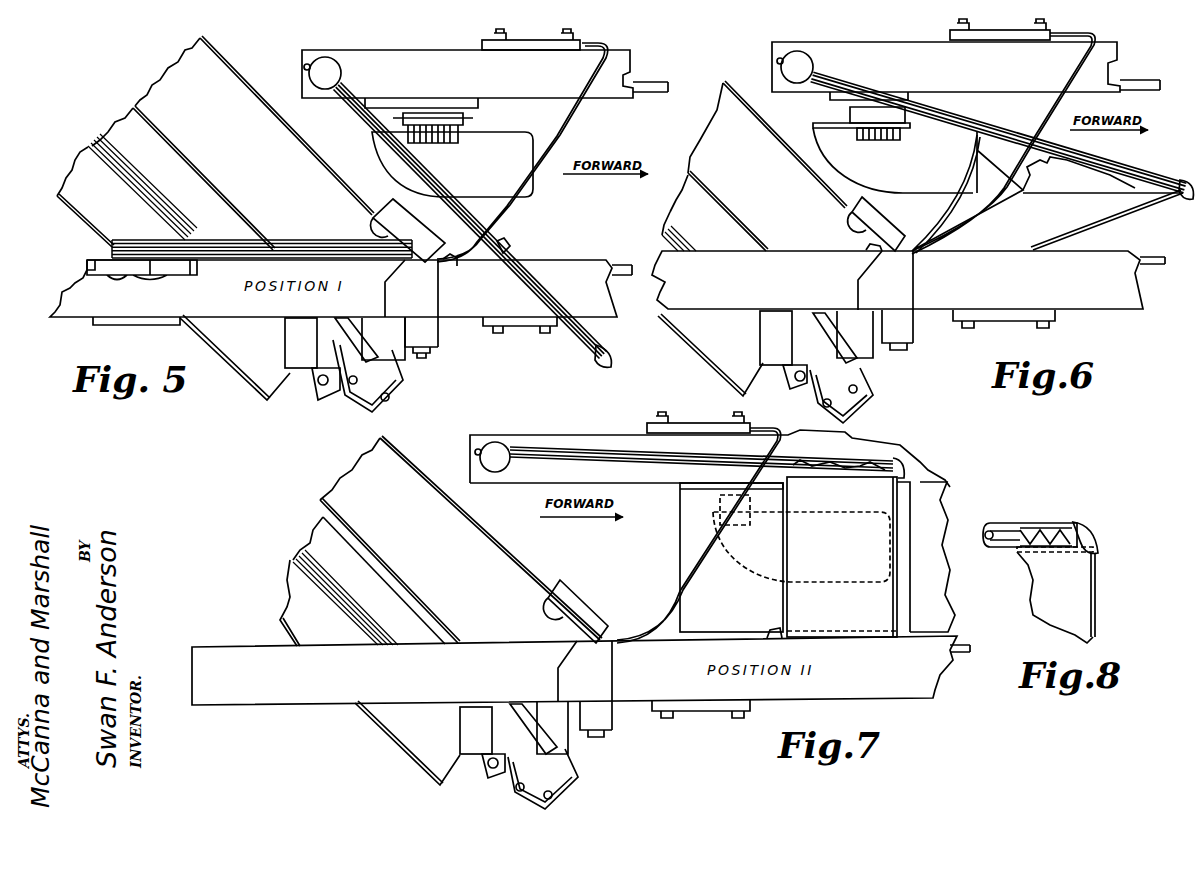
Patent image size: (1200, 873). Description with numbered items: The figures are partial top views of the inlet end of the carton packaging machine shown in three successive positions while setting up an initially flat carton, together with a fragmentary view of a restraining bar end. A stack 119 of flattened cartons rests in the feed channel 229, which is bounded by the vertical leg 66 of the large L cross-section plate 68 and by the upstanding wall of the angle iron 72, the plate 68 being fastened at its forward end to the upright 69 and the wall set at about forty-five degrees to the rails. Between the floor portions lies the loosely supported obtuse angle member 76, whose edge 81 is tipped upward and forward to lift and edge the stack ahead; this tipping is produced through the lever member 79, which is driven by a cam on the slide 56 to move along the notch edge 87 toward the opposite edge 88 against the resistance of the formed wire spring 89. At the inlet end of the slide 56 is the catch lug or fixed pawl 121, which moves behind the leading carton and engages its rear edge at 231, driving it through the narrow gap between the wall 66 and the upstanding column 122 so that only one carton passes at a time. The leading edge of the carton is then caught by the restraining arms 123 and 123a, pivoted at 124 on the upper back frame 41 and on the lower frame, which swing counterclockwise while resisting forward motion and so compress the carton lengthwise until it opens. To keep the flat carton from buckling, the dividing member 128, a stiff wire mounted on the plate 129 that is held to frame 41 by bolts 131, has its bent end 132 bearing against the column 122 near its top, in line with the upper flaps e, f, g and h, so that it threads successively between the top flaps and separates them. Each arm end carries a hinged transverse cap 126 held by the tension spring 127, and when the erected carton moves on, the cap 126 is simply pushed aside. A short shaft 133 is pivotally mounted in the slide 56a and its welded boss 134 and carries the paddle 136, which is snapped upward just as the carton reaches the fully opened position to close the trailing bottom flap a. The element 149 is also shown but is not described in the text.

In FIG. 5, the upper back frame 41 is at (411, 53).
In FIG. 6, the upper back frame 41 is at (898, 52).
In FIG. 7, the upper back frame 41 is at (560, 445).
In FIG. 5, the slide 56 is at (622, 263).
In FIG. 6, the slide 56 is at (1152, 257).
In FIG. 7, the slide 56 is at (955, 652).
In FIG. 5, the slide 56a is at (653, 81).
In FIG. 6, the slide 56a is at (1135, 80).
In FIG. 5, the vertical leg 66 is at (388, 207).
In FIG. 6, the vertical leg 66 is at (840, 208).
In FIG. 7, the vertical leg 66 is at (565, 623).
In FIG. 5, the L cross-section plate 68 is at (172, 70).
In FIG. 6, the L cross-section plate 68 is at (711, 135).
In FIG. 7, the L cross-section plate 68 is at (350, 478).
In FIG. 5, the upright 69 is at (418, 226).
In FIG. 6, the upright 69 is at (880, 226).
In FIG. 7, the upright 69 is at (585, 619).
In FIG. 5, the angle iron 72 is at (67, 175).
In FIG. 6, the angle iron 72 is at (658, 292).
In FIG. 7, the angle iron 72 is at (282, 605).
In FIG. 5, the obtuse angle member 76 is at (110, 120).
In FIG. 6, the obtuse angle member 76 is at (681, 214).
In FIG. 7, the obtuse angle member 76 is at (303, 540).
In FIG. 5, the lever member 79 is at (311, 380).
In FIG. 6, the lever member 79 is at (790, 370).
In FIG. 7, the lever member 79 is at (495, 770).
In FIG. 5, the edge 81 is at (220, 194).
In FIG. 6, the edge 81 is at (718, 214).
In FIG. 7, the edge 81 is at (393, 594).
In FIG. 5, the edge 87 is at (320, 343).
In FIG. 6, the edge 87 is at (796, 342).
In FIG. 7, the edge 87 is at (496, 737).
In FIG. 5, the edge 88 is at (361, 322).
In FIG. 6, the edge 88 is at (836, 323).
In FIG. 7, the edge 88 is at (532, 708).
In FIG. 5, the formed wire spring 89 is at (396, 358).
In FIG. 6, the formed wire spring 89 is at (861, 352).
In FIG. 7, the formed wire spring 89 is at (566, 744).
In FIG. 5, the stack 119 is at (132, 240).
In FIG. 5, the catch lug or fixed pawl 121 is at (128, 275).
In FIG. 7, the catch lug or fixed pawl 121 is at (465, 643).
In FIG. 5, the upstanding column 122 is at (425, 288).
In FIG. 6, the upstanding column 122 is at (897, 286).
In FIG. 7, the upstanding column 122 is at (600, 678).
In FIG. 5, the arm 123 is at (549, 296).
In FIG. 6, the arm 123 is at (1135, 170).
In FIG. 7, the arm 123 is at (590, 448).
In FIG. 8, the arm 123 is at (1016, 525).
In FIG. 5, the arm 123a is at (511, 247).
In FIG. 5, the pivot 124 is at (330, 66).
In FIG. 6, the pivot 124 is at (803, 60).
In FIG. 7, the pivot 124 is at (505, 450).
In FIG. 5, the hinged transverse cap or lever 126 is at (612, 350).
In FIG. 6, the hinged transverse cap or lever 126 is at (1183, 178).
In FIG. 8, the hinged transverse cap or lever 126 is at (1092, 543).
In FIG. 8, the tension spring 127 is at (1055, 528).
In FIG. 5, the dividing member 128 is at (571, 117).
In FIG. 6, the dividing member 128 is at (1062, 100).
In FIG. 7, the dividing member 128 is at (672, 595).
In FIG. 5, the plate 129 is at (532, 41).
In FIG. 6, the plate 129 is at (1012, 26).
In FIG. 7, the plate 129 is at (712, 423).
In FIG. 5, the bolts 131 is at (498, 32).
In FIG. 6, the bolts 131 is at (963, 25).
In FIG. 7, the bolts 131 is at (670, 412).
In FIG. 5, the bent end 132 is at (452, 260).
In FIG. 5, the short shaft 133 is at (463, 119).
In FIG. 6, the short shaft 133 is at (852, 113).
In FIG. 7, the short shaft 133 is at (718, 503).
In FIG. 5, the boss 134 is at (466, 103).
In FIG. 6, the boss 134 is at (838, 98).
In FIG. 7, the boss 134 is at (690, 488).
In FIG. 5, the paddle or arm 136 is at (512, 146).
In FIG. 6, the paddle or arm 136 is at (840, 141).
In FIG. 7, the paddle or arm 136 is at (855, 520).
In FIG. 6, the clip 149 is at (869, 246).
In FIG. 7, the clip 149 is at (770, 638).
In FIG. 5, the feed channel 229 is at (86, 142).
In FIG. 6, the feed channel 229 is at (665, 233).
In FIG. 7, the feed channel 229 is at (291, 561).
In FIG. 5, the rear edge 231 is at (163, 275).
In FIG. 7, the trailing bottom flap a is at (842, 557).
In FIG. 5, the upper trailing flap e is at (190, 256).
In FIG. 6, the upper trailing flap e is at (948, 205).
In FIG. 7, the upper trailing flap e is at (731, 557).
In FIG. 5, the upper leading flap f is at (370, 258).
In FIG. 6, the upper leading flap f is at (1112, 220).
In FIG. 7, the upper leading flap f is at (905, 550).
In FIG. 5, the upper side flap g is at (198, 262).
In FIG. 6, the upper side flap g is at (985, 253).
In FIG. 7, the upper side flap g is at (858, 638).
In FIG. 5, the upper side flap h is at (360, 250).
In FIG. 6, the upper side flap h is at (1047, 160).
In FIG. 7, the upper side flap h is at (875, 462).